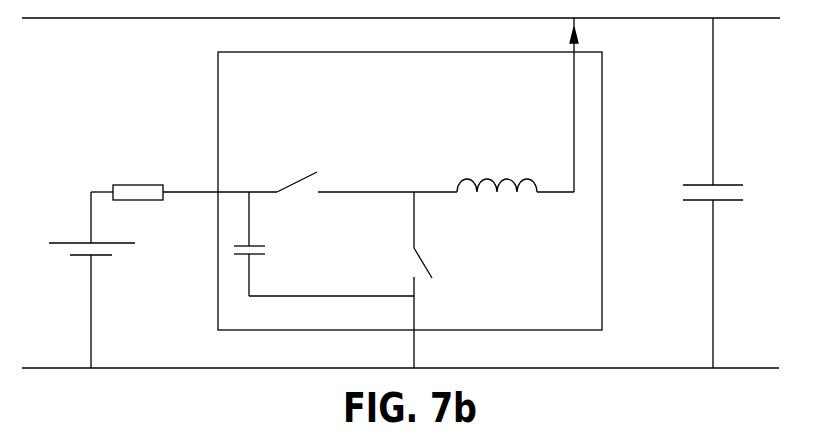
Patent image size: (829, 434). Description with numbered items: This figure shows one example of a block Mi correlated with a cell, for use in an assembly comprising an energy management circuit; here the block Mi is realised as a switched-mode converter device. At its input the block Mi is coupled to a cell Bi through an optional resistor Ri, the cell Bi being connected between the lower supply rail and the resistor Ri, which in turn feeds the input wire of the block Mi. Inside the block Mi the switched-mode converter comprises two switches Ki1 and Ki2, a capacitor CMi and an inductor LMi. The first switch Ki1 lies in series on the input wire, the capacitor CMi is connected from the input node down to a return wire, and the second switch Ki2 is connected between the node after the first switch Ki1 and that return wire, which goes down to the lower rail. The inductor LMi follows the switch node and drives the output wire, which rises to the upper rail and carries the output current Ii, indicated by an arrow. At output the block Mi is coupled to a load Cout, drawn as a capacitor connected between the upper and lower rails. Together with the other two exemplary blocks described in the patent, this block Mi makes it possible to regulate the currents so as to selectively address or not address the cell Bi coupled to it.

The block Mi is at (410, 191).
The optional resistor Ri is at (184, 179).
The cell Bi is at (94, 280).
The first switch Ki1 is at (345, 168).
The second switch Ki2 is at (438, 280).
The capacitor CMi is at (324, 244).
The inductor LMi is at (494, 169).
The output current of module i Ii is at (563, 105).
The load Cout is at (734, 193).